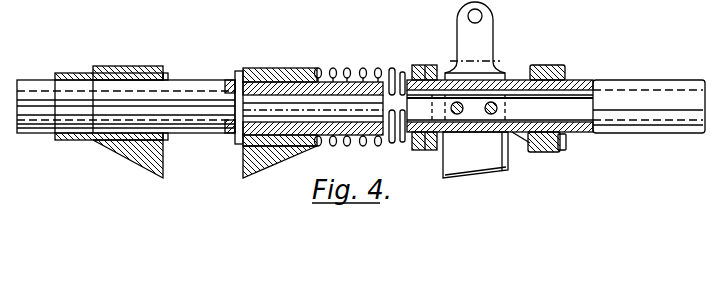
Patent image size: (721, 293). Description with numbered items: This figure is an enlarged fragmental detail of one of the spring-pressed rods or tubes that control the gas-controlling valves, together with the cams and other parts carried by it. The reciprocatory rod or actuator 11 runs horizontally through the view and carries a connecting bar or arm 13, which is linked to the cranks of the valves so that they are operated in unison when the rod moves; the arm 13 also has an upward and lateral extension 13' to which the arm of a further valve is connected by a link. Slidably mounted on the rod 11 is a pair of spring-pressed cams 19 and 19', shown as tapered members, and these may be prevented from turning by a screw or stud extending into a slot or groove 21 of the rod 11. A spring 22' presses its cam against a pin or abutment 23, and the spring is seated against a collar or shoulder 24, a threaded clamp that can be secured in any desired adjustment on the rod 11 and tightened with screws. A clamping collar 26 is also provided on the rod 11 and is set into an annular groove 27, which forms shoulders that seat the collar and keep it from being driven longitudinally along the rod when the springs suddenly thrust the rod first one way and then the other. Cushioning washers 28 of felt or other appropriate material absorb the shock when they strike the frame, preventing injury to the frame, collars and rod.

The reciprocatory rod or actuator 11 is at (647, 83).
The connecting bar or arm 13 is at (475, 155).
The upward and lateral extension 13' is at (487, 41).
The spring-pressed cam 19 is at (268, 123).
The spring-pressed cam 19' is at (123, 122).
The slot or groove 21 is at (39, 97).
The spring 22' is at (348, 96).
The pin or abutment 23 is at (177, 76).
The collar or shoulder 24 is at (430, 65).
The clamping collar 26 is at (543, 67).
The annular groove 27 is at (542, 152).
The cushioning washer 28 is at (567, 143).